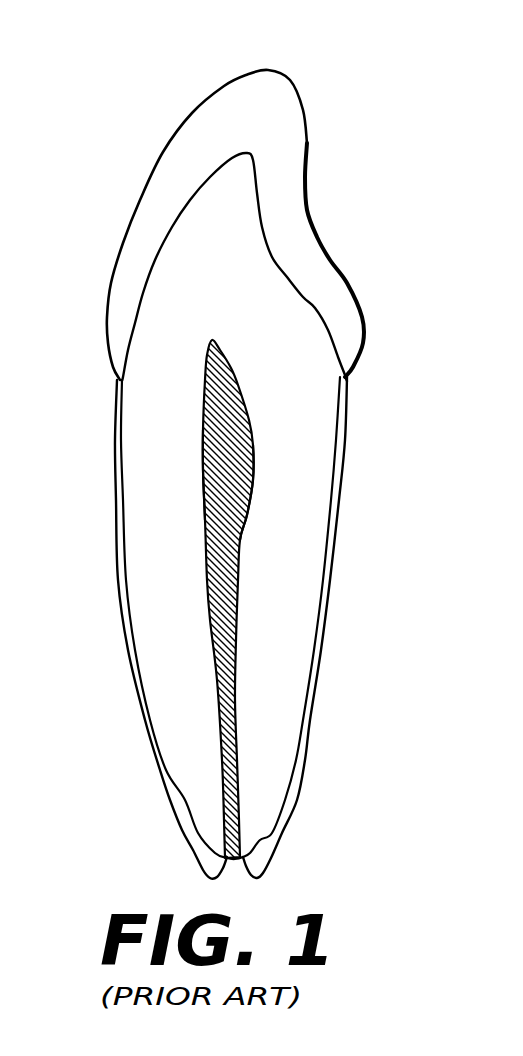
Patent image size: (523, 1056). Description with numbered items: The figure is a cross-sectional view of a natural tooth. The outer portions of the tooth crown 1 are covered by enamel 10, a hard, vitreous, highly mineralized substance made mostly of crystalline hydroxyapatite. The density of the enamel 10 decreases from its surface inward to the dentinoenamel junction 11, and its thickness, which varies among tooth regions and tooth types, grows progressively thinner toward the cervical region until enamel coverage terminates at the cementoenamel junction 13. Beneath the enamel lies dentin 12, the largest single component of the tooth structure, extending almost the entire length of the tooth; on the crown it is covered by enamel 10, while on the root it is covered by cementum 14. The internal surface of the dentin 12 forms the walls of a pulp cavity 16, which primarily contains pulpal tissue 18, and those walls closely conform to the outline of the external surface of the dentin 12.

The tooth crown 1 is at (151, 33).
The enamel 10 is at (315, 224).
The dentinoenamel junction 11 is at (313, 309).
The dentin 12 is at (297, 433).
The cementoenamel junction 13 is at (345, 377).
The cementum 14 is at (323, 655).
The pulp cavity 16 is at (238, 537).
The pulpal tissue 18 is at (227, 463).